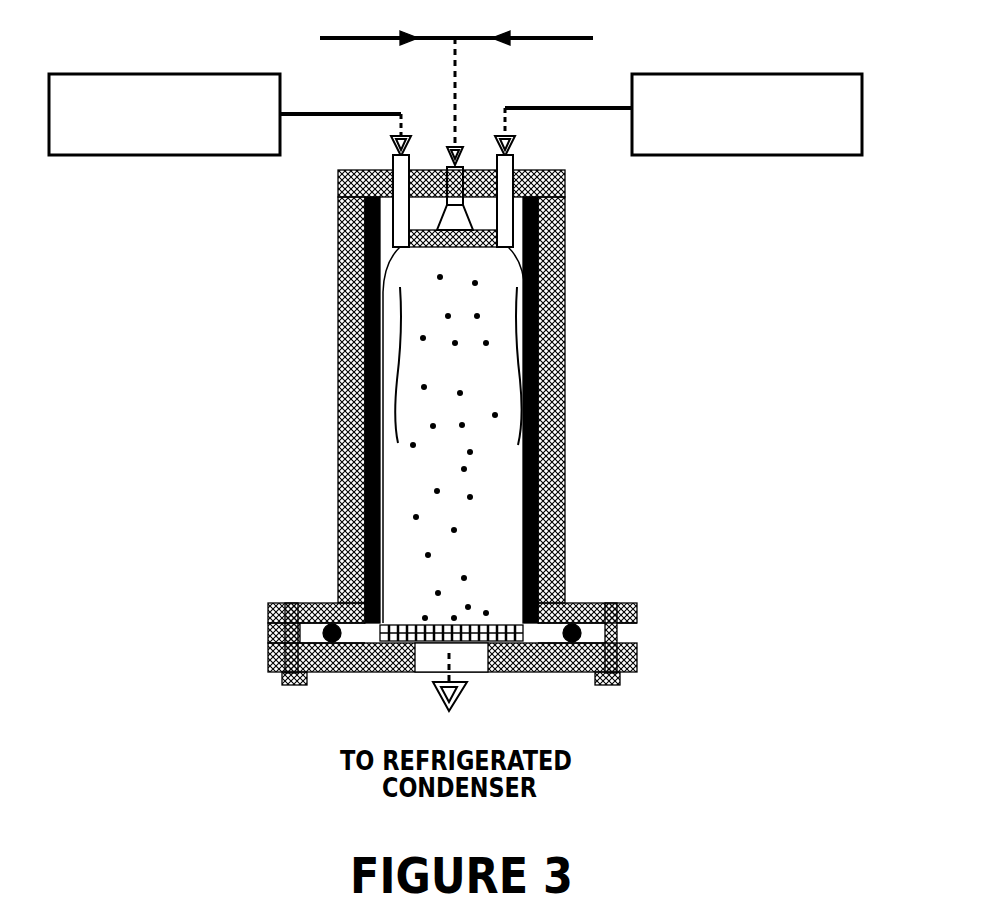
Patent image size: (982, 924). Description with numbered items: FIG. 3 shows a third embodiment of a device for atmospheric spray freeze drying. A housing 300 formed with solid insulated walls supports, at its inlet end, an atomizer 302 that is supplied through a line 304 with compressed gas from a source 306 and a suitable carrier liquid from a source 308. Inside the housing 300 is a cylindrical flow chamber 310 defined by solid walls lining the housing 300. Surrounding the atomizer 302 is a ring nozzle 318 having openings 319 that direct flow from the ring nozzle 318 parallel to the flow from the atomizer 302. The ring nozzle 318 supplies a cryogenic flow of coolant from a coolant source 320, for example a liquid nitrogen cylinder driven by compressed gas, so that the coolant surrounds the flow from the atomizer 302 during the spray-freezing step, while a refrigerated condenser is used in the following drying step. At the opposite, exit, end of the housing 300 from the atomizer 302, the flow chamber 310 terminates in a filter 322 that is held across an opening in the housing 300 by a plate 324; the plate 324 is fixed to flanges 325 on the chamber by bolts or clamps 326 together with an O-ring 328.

The housing 300 is at (439, 386).
The atomizer 302 is at (458, 219).
The line 304 is at (461, 108).
The source of compressed gas 306 is at (353, 38).
The source of carrier liquid 308 is at (545, 38).
The flow chamber 310 is at (340, 345).
The ring nozzle 318 is at (565, 278).
The openings 319 is at (346, 300).
The coolant source 320 is at (123, 155).
The filter 322 is at (350, 671).
The plate 324 is at (557, 670).
The flanges 325 is at (636, 645).
The bolts or clamps 326 is at (270, 621).
The O-ring 328 is at (322, 603).